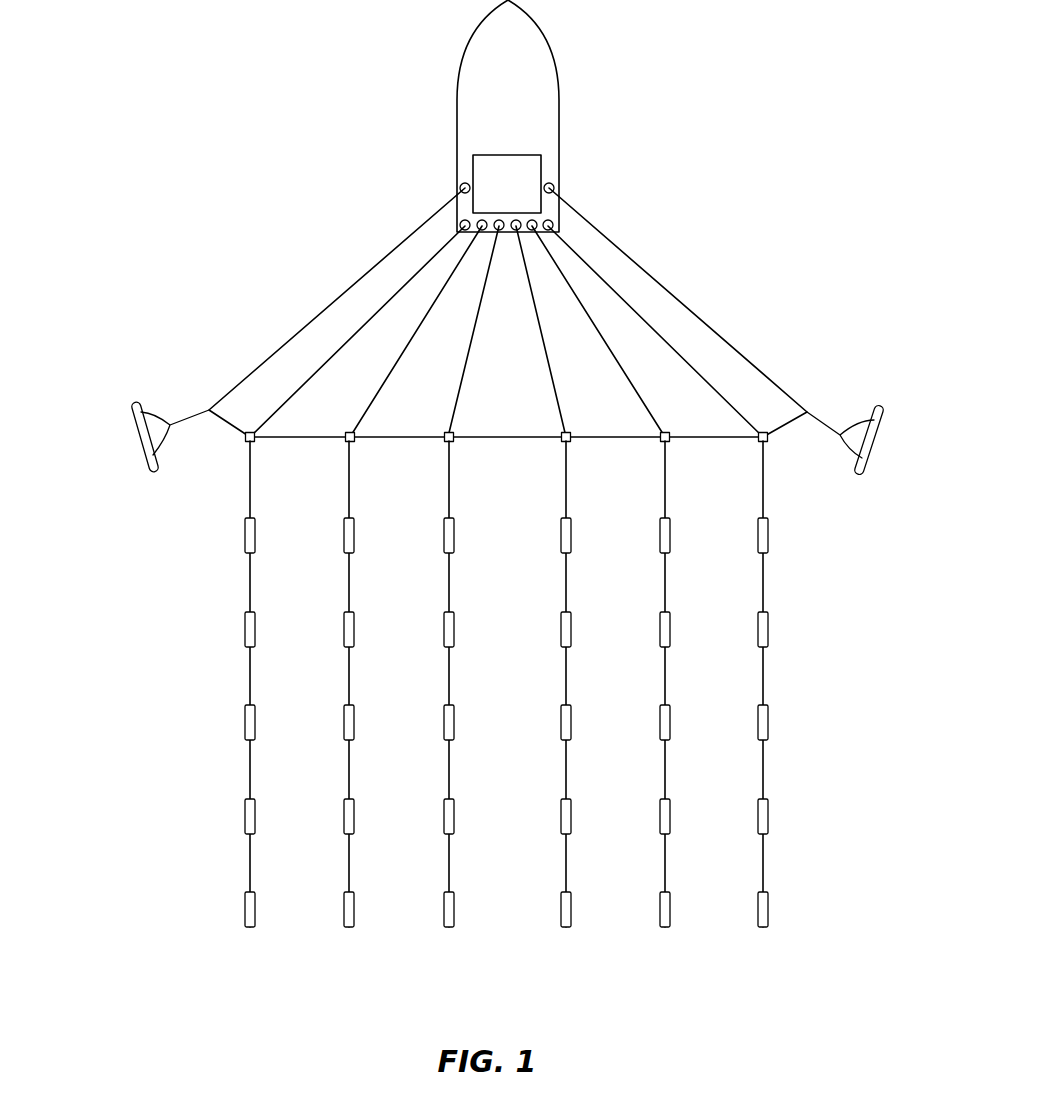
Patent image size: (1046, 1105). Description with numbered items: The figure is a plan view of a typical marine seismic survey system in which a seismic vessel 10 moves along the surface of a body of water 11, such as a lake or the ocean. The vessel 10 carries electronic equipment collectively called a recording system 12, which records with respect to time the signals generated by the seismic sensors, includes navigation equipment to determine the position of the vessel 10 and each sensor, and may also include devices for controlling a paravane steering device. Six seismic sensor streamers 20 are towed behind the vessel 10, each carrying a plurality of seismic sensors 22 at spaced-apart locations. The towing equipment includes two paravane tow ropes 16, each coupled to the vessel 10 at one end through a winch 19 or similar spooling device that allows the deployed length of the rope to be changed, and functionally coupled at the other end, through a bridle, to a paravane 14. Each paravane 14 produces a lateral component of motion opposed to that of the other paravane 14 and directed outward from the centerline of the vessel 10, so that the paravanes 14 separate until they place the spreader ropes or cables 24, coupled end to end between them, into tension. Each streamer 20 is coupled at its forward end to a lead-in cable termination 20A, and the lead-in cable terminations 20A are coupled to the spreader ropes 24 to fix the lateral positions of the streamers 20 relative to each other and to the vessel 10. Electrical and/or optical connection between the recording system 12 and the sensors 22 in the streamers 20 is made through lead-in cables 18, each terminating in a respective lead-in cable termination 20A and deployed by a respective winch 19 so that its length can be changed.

The seismic vessel 10 is at (560, 106).
The body of water 11 is at (750, 212).
The recording system 12 is at (527, 184).
The paravane 14 is at (138, 440).
The paravane tow rope 16 is at (317, 323).
The lead-in cable 18 is at (400, 292).
The winch 19 is at (460, 222).
The seismic sensor streamer 20 is at (248, 478).
The lead-in cable termination 20A is at (249, 432).
The seismic sensor 22 is at (245, 535).
The spreader rope 24 is at (473, 440).